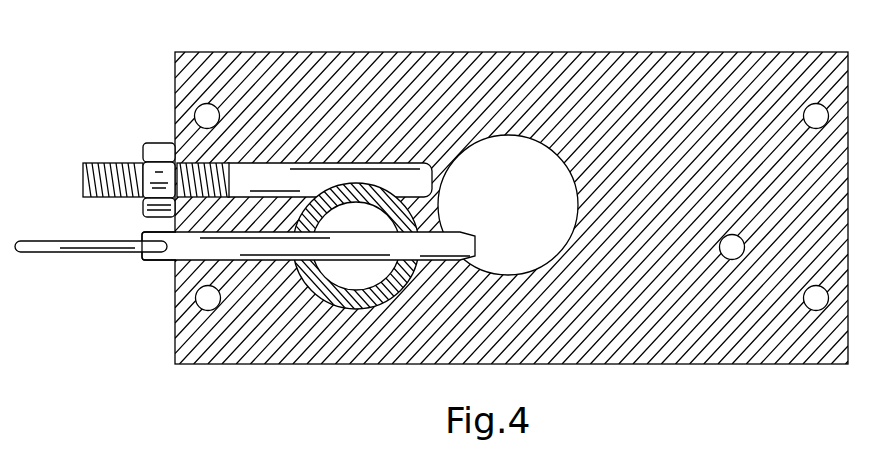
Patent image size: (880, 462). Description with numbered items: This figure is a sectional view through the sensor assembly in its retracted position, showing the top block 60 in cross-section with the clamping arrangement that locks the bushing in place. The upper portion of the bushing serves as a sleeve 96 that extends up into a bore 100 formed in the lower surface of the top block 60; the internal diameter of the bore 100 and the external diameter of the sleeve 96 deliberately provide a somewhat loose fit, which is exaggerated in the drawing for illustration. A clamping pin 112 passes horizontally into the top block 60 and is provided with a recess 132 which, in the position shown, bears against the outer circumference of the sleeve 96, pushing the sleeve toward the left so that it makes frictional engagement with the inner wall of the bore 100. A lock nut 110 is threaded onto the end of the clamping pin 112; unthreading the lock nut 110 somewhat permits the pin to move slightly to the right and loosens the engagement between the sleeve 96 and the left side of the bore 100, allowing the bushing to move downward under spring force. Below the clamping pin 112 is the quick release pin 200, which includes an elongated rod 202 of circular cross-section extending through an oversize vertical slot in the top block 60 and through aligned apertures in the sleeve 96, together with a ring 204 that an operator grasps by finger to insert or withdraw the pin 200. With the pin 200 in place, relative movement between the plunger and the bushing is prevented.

The top block 60 is at (632, 65).
The sleeve 96 is at (328, 290).
The bore 100 is at (418, 277).
The lock nut 110 is at (164, 152).
The clamping pin 112 is at (108, 163).
The recess 132 is at (320, 197).
The quick release pin 200 is at (157, 270).
The elongated rod 202 is at (213, 246).
The ring 204 is at (72, 248).